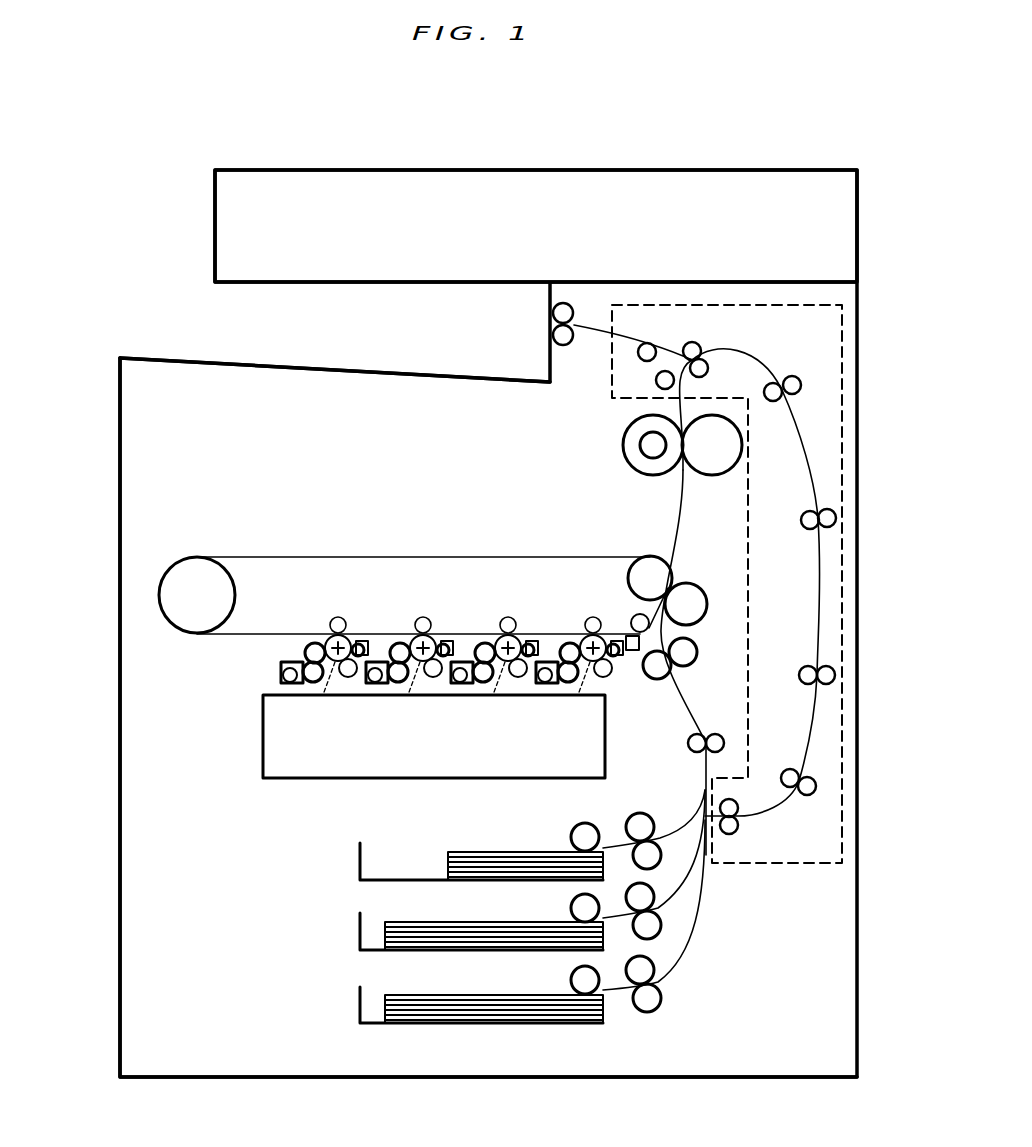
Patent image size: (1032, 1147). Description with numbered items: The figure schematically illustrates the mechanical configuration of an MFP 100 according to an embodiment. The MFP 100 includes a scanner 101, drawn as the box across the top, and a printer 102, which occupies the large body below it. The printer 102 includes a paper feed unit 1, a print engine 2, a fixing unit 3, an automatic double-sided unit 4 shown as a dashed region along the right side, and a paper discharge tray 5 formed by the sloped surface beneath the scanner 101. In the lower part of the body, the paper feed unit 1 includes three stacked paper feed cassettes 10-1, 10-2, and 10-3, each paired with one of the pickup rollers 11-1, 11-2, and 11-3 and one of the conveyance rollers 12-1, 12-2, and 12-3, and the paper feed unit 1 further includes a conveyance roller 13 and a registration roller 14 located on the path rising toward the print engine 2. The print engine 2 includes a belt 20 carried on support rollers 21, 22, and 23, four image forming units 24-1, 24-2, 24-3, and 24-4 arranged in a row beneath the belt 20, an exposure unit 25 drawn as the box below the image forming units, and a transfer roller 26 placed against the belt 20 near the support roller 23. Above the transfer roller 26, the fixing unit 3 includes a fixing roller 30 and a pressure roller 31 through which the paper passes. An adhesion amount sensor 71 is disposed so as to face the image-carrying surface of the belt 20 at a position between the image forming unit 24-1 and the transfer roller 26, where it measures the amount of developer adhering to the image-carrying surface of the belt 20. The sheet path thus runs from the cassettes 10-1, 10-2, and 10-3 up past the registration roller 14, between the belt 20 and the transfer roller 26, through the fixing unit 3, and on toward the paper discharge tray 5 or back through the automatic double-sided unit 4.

The MFP 100 is at (621, 140).
The scanner 101 is at (215, 227).
The printer 102 is at (124, 493).
The paper feed unit 1 is at (484, 891).
The print engine 2 is at (456, 625).
The fixing unit 3 is at (643, 465).
The automatic double-sided unit (ADU) 4 is at (842, 382).
The paper discharge tray 5 is at (338, 368).
The paper feed cassette 10-1 is at (360, 859).
The paper feed cassette 10-2 is at (360, 929).
The paper feed cassette 10-3 is at (360, 1000).
The pickup roller 11-1 is at (580, 831).
The pickup roller 11-2 is at (580, 901).
The pickup roller 11-3 is at (580, 974).
The conveyance roller 12-1 is at (664, 842).
The conveyance roller 12-2 is at (661, 922).
The conveyance roller 12-3 is at (661, 998).
The conveyance roller 13 is at (722, 733).
The registration roller 14 is at (688, 671).
The belt 20 is at (458, 556).
The support roller 21 is at (197, 624).
The support roller 22 is at (652, 632).
The support roller 23 is at (653, 571).
The image forming unit 24-1 is at (574, 620).
The image forming unit 24-2 is at (490, 618).
The image forming unit 24-3 is at (407, 630).
The image forming unit 24-4 is at (331, 619).
The exposure unit 25 is at (263, 737).
The transfer roller 26 is at (692, 600).
The fixing roller 30 is at (652, 462).
The pressure roller 31 is at (712, 462).
The adhesion amount sensor 71 is at (632, 655).